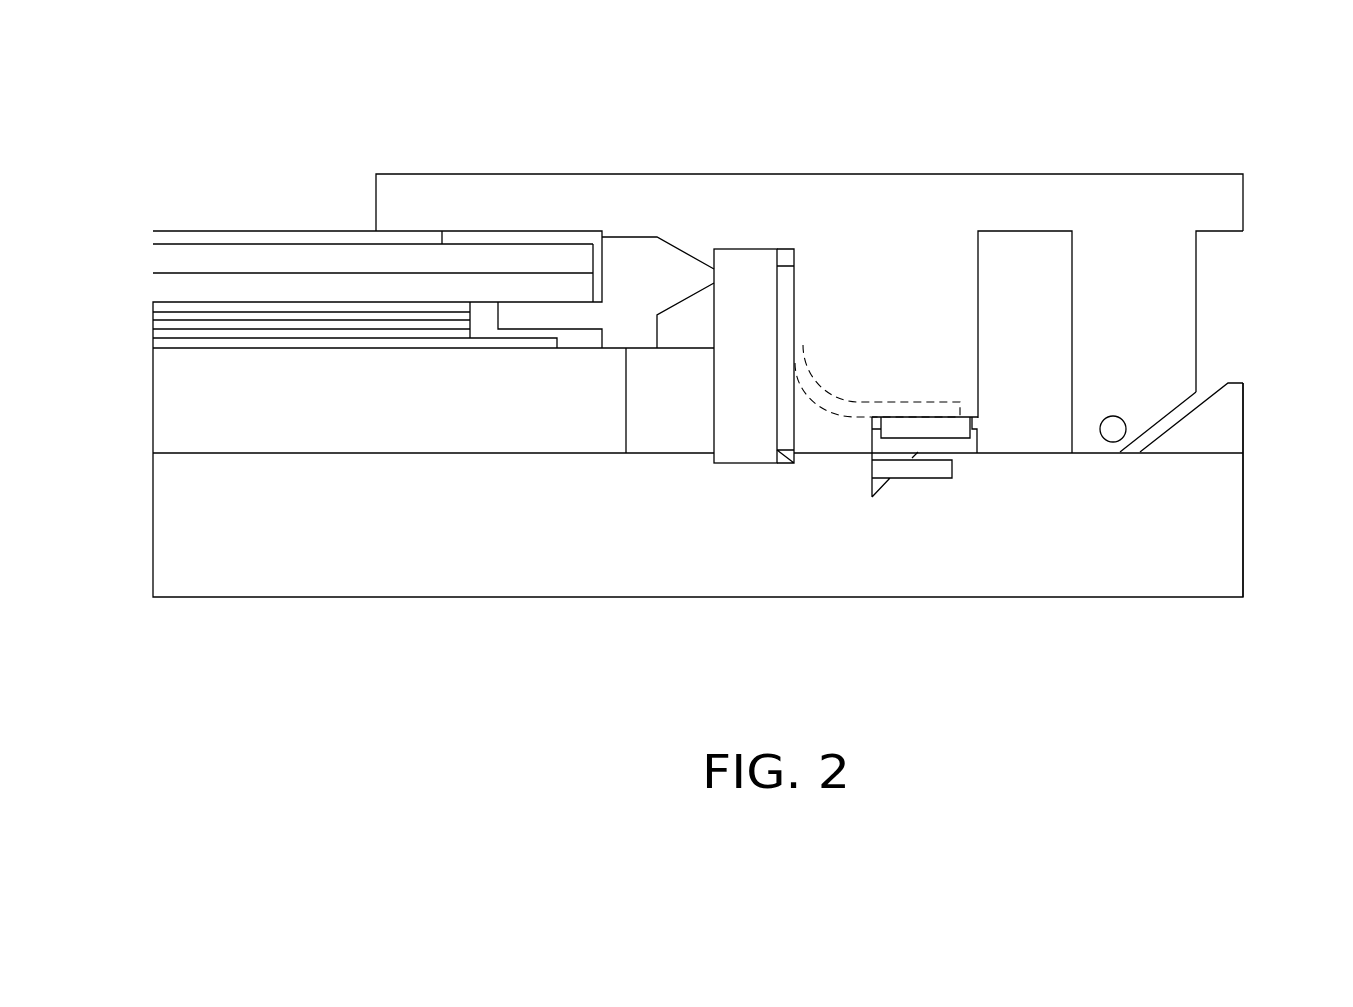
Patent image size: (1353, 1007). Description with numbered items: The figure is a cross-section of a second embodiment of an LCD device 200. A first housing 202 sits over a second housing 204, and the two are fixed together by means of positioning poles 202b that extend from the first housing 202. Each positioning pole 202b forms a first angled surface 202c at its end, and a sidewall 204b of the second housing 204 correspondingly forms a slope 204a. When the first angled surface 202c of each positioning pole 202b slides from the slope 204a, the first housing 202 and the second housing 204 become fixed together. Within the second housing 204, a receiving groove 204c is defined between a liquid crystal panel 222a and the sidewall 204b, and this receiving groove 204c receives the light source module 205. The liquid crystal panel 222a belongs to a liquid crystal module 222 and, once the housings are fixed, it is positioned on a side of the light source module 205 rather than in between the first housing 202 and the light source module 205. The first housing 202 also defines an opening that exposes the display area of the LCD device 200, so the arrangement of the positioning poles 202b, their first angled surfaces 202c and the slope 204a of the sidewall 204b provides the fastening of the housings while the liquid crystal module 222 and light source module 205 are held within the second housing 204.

The LCD device 200 is at (785, 99).
The first housing 202 is at (928, 185).
The positioning pole 202b is at (1188, 280).
The first angled surface 202c is at (1158, 427).
The second housing 204 is at (845, 567).
The slope 204a is at (1157, 433).
The sidewall 204b is at (1233, 430).
The receiving groove 204c is at (1018, 425).
The light source module 205 is at (653, 428).
The liquid crystal module 222 is at (200, 200).
The liquid crystal panel 222a is at (163, 258).